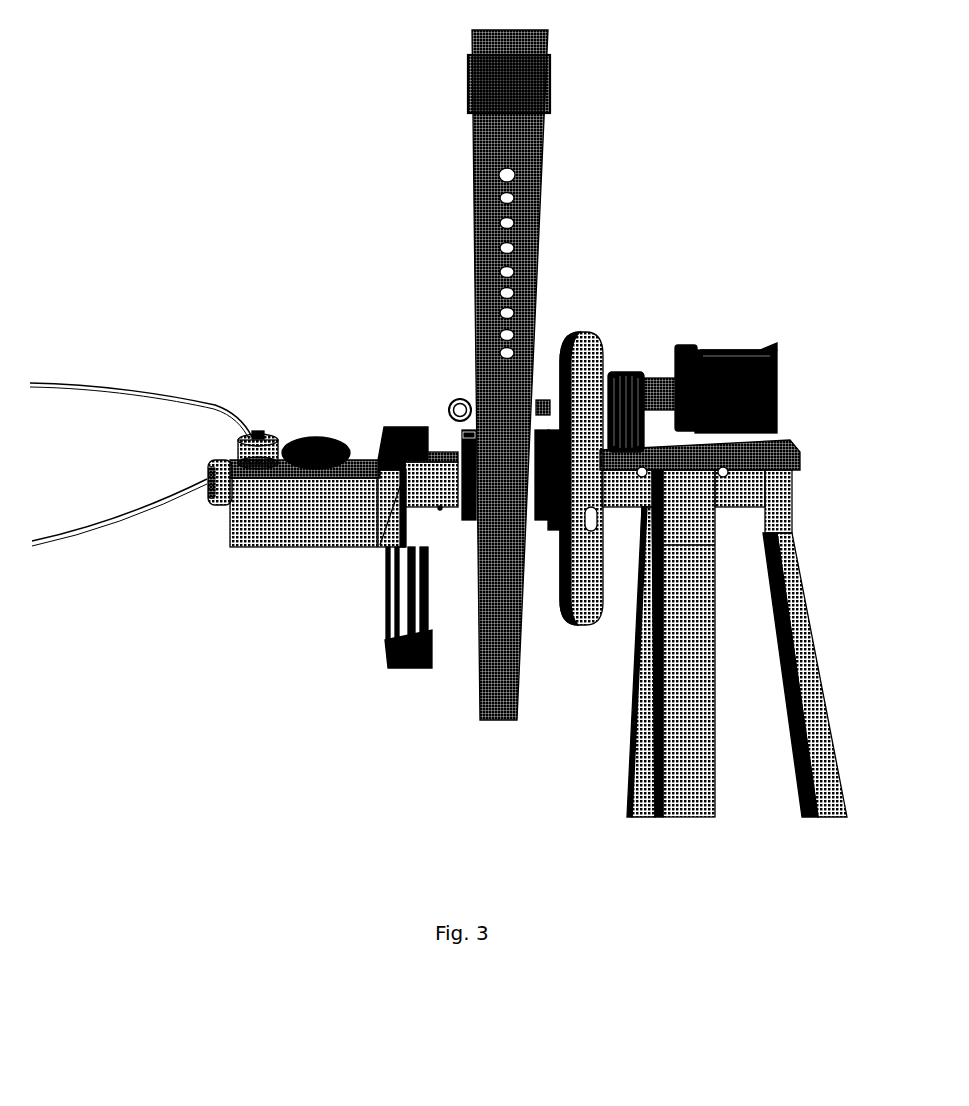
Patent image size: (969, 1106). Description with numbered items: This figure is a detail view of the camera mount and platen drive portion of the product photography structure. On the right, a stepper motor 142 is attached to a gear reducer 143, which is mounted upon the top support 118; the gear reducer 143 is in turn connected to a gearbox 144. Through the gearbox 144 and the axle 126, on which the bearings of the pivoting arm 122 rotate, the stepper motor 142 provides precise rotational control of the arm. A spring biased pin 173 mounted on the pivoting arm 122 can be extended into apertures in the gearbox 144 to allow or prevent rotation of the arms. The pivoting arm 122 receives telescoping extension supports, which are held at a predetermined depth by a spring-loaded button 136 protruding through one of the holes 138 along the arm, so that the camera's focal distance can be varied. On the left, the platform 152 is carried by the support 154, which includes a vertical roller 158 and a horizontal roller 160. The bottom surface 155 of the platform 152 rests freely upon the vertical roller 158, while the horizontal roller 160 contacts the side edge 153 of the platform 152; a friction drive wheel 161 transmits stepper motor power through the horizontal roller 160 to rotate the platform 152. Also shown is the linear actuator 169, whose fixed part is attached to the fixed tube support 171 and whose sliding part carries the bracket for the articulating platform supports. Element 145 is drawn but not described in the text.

The top support 118 is at (709, 628).
The pivoting arm 122 is at (549, 143).
The axle 126 is at (572, 540).
The spring-loaded button 136 is at (512, 177).
The holes 138 is at (512, 222).
The stepper motor 142 is at (760, 349).
The gear reducer 143 is at (632, 371).
The gearbox 144 is at (586, 332).
The spring 145 is at (562, 406).
The platform 152 is at (125, 475).
The side edge 153 is at (119, 526).
The support 154 is at (307, 548).
The bottom surface 155 is at (80, 536).
The vertical roller 158 is at (213, 504).
The horizontal roller 160 is at (272, 432).
The friction drive wheel 161 is at (313, 437).
The linear actuator 169 is at (395, 583).
The fixed tube support 171 is at (455, 470).
The spring biased pin 173 is at (452, 398).